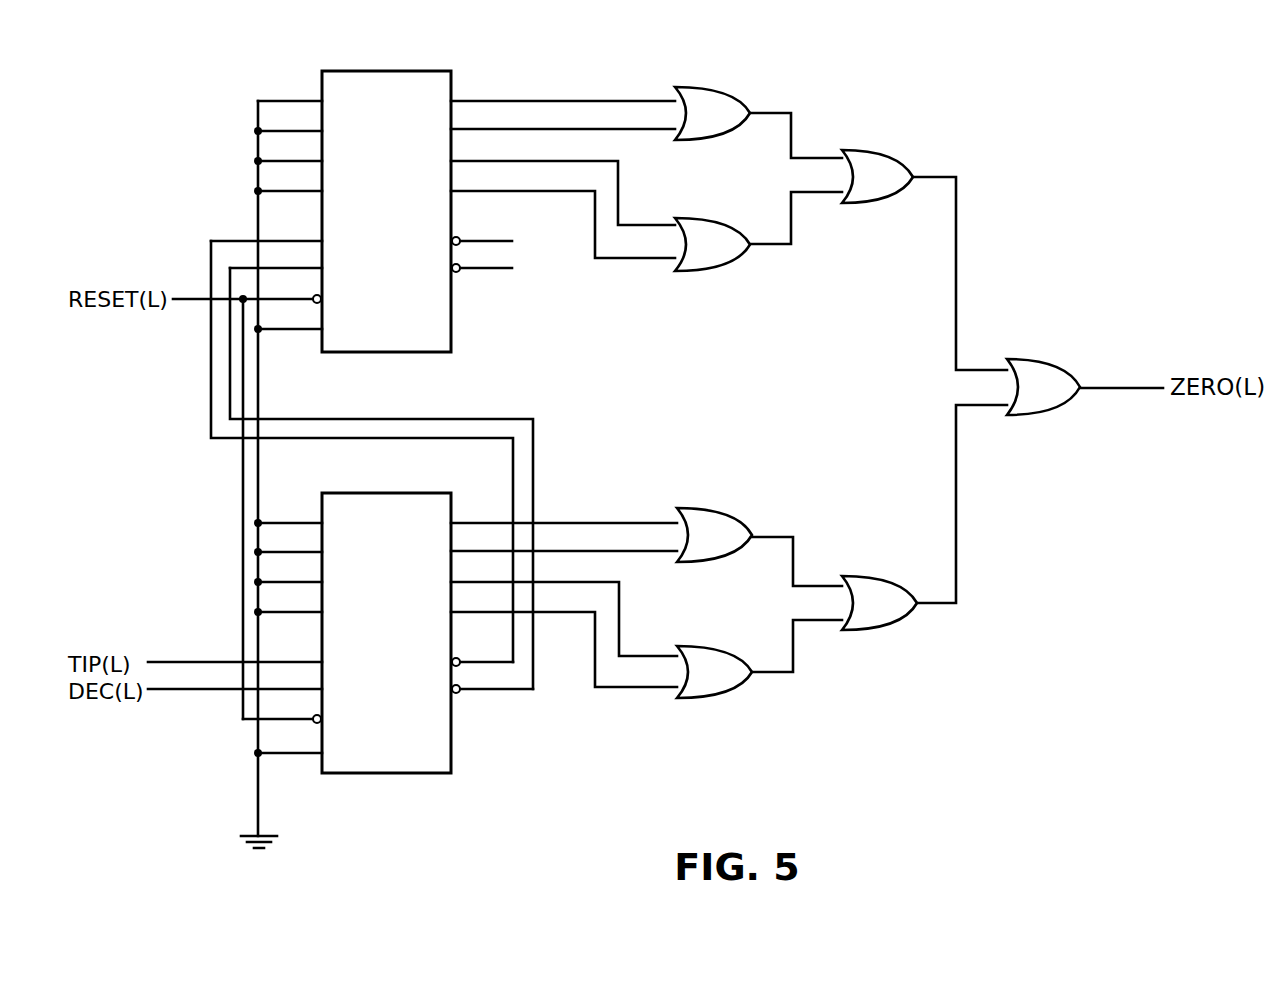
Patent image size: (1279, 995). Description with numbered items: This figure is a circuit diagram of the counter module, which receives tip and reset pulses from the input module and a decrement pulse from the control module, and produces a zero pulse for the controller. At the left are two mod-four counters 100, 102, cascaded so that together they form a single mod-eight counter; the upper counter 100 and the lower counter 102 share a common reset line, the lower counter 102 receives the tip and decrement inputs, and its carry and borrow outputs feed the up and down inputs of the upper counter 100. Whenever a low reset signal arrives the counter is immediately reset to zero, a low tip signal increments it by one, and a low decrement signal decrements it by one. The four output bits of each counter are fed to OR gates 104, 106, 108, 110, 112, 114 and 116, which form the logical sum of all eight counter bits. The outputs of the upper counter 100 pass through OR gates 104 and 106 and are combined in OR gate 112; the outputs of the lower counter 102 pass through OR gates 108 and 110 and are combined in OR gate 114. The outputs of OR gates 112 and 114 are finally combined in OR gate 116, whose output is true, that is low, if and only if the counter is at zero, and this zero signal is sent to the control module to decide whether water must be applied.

The mod-4 counter 100 is at (451, 323).
The mod-4 counter 102 is at (451, 743).
The OR gate 104 is at (735, 92).
The OR gate 106 is at (747, 258).
The OR gate 108 is at (732, 512).
The OR gate 110 is at (748, 678).
The OR gate 112 is at (900, 152).
The OR gate 114 is at (897, 577).
The OR gate 116 is at (1065, 368).